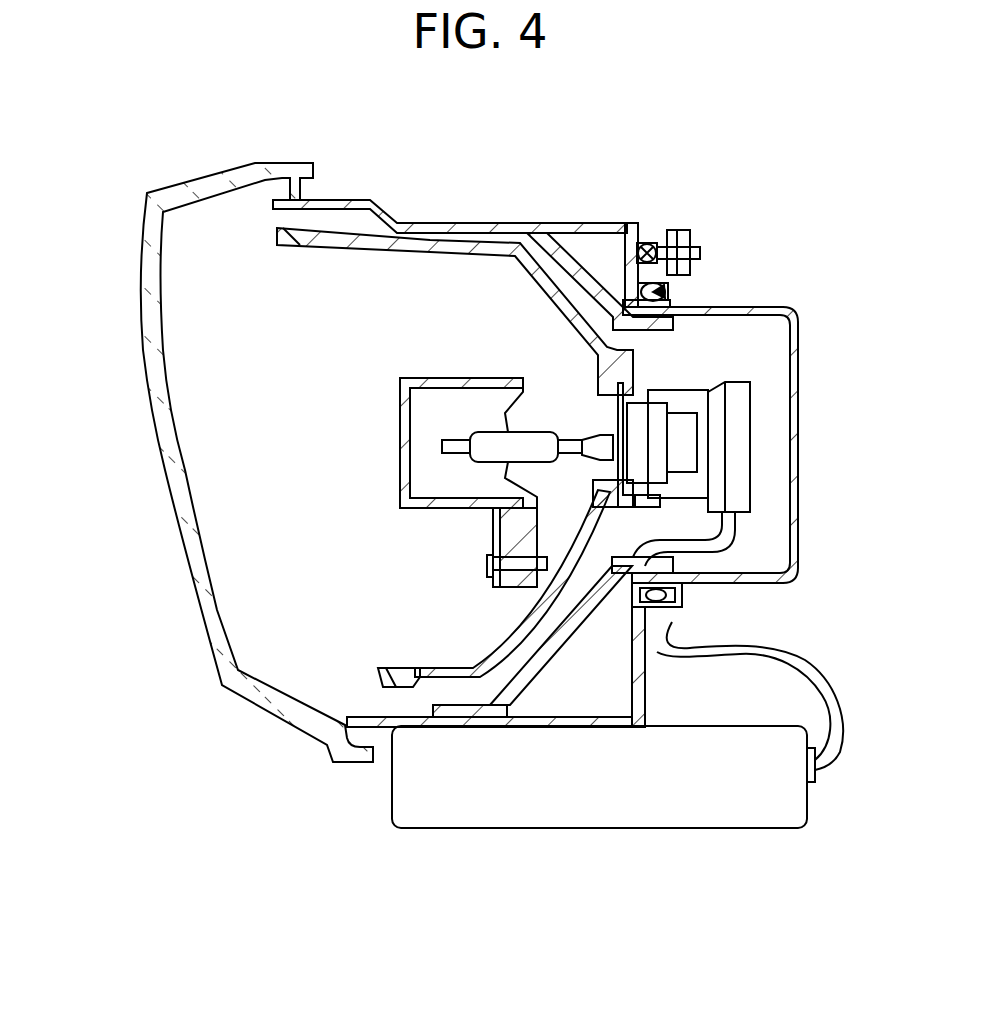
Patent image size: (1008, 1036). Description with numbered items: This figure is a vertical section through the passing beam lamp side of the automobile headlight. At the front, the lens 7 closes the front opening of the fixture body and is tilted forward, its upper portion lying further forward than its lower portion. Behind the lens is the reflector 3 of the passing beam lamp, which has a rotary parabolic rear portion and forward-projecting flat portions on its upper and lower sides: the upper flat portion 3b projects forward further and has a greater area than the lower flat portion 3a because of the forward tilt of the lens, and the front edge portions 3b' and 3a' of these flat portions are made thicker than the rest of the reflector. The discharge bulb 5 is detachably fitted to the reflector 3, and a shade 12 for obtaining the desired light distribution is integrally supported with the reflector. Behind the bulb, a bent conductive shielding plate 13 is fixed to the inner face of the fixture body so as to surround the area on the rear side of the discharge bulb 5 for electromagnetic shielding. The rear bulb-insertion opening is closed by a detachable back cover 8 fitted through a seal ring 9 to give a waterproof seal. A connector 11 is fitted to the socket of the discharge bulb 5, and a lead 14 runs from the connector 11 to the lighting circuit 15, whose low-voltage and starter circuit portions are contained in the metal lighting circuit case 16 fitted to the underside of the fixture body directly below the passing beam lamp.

The reflector 3 is at (527, 255).
The flat portion 3a is at (512, 583).
The front edge portion 3a' is at (373, 645).
The flat portion 3b is at (450, 201).
The front edge portion 3b' is at (455, 254).
The discharge bulb 5 is at (490, 448).
The lens 7 is at (165, 466).
The back cover 8 is at (797, 350).
The seal ring 9 is at (668, 281).
The connector 11 is at (740, 452).
The shade 12 is at (398, 427).
The shielding plate 13 is at (590, 278).
The lead 14 is at (743, 650).
The lighting circuit 15 is at (755, 836).
The lighting circuit case 16 is at (617, 813).